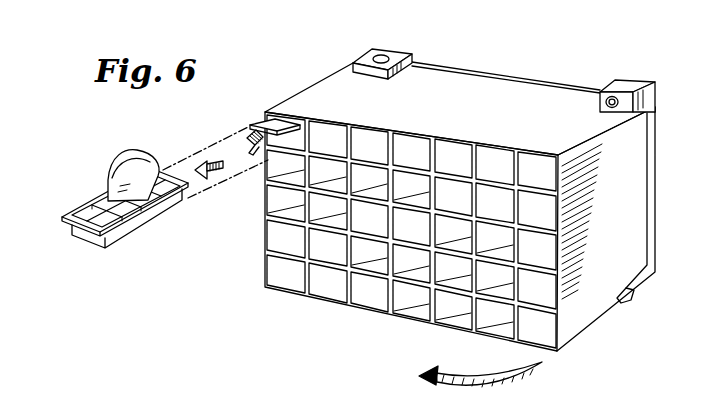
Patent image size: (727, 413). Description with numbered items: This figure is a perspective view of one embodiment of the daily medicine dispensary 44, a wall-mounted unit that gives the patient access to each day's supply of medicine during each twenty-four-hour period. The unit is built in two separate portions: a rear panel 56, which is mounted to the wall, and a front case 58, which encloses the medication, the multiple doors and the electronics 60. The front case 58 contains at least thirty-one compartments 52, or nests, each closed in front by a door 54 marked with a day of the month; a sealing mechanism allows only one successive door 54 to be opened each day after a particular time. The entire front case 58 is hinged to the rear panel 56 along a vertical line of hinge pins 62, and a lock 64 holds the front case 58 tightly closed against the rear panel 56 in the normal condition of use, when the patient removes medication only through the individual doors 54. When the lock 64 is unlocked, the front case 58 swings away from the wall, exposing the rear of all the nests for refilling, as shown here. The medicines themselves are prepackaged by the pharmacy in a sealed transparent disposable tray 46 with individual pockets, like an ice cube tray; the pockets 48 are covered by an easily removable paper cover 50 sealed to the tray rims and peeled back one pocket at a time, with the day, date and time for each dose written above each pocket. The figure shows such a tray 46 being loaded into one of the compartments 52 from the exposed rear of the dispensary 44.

The daily medicine dispensary 44 is at (587, 333).
The tray 46 is at (128, 208).
The tray compartments 48 is at (103, 206).
The paper cover 50 is at (117, 165).
The compartment 52 is at (300, 139).
The door 54 is at (408, 142).
The rear panel 56 is at (525, 78).
The front case 58 is at (440, 84).
The electronics 60 is at (388, 316).
The hinge pins 62 is at (374, 53).
The lock 64 is at (625, 88).